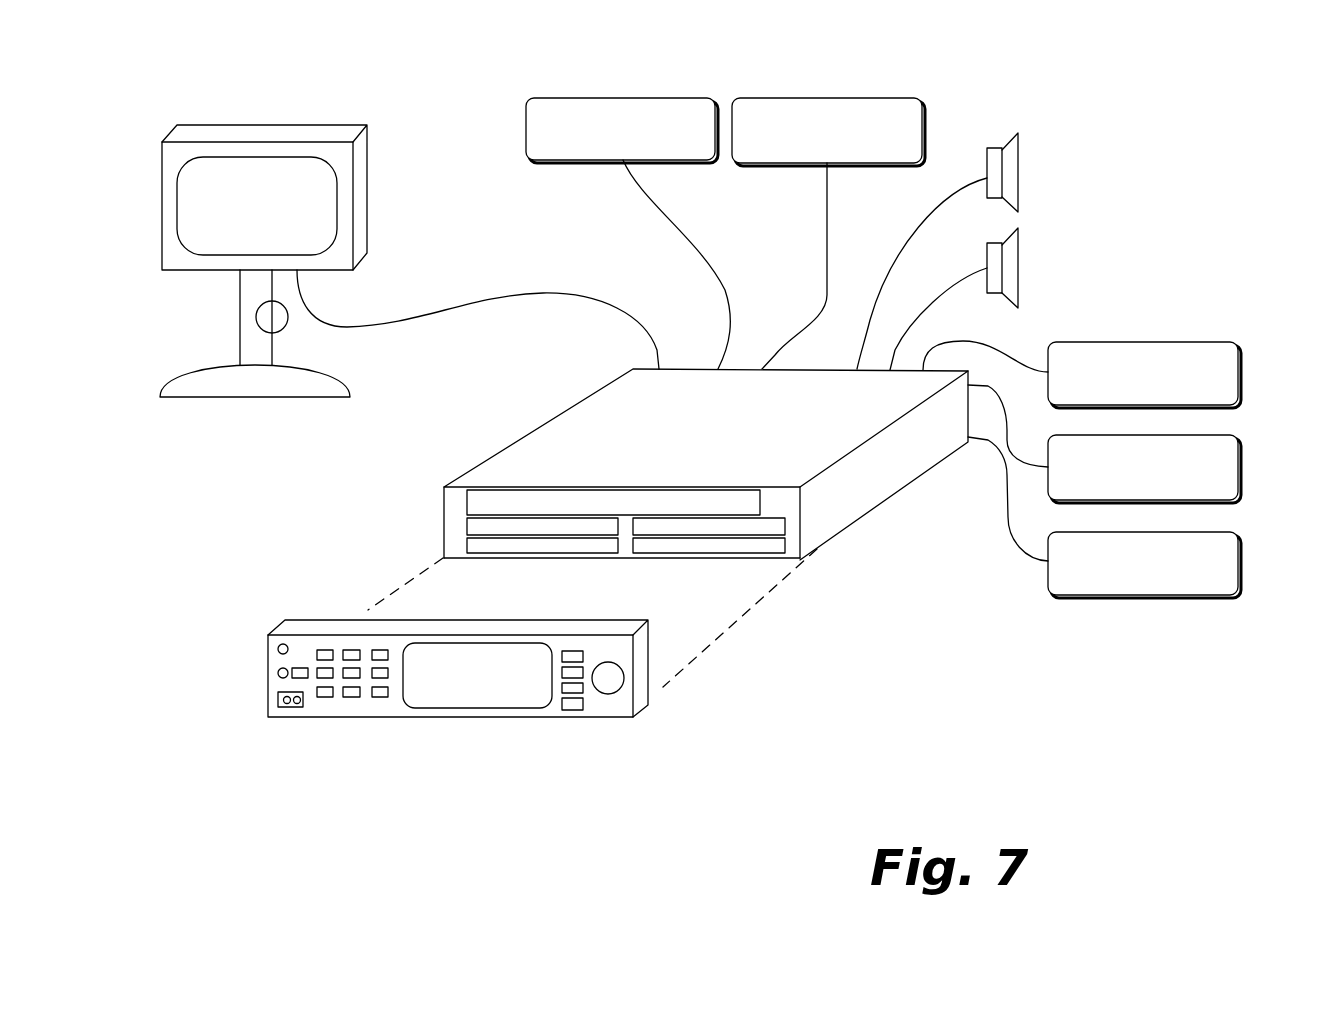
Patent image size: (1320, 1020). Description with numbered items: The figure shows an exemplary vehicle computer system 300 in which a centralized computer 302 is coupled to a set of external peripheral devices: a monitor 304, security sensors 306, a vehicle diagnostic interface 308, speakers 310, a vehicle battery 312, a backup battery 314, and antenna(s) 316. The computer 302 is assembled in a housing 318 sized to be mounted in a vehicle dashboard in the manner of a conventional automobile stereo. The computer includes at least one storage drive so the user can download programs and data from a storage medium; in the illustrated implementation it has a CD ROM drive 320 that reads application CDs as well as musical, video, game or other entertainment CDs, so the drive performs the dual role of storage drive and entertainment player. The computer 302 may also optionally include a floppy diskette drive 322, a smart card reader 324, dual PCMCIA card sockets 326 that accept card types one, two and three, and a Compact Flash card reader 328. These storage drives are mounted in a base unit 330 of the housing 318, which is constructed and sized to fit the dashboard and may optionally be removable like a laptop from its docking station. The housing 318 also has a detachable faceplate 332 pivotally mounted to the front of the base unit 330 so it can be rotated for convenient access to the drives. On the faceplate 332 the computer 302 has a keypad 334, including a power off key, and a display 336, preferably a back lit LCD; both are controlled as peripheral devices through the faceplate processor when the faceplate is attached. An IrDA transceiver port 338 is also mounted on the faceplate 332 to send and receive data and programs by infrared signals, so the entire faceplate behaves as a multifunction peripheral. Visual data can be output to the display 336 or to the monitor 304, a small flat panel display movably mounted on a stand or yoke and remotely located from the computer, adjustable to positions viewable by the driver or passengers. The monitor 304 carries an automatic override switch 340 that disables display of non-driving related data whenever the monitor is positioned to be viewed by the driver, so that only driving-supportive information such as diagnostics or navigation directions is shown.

The vehicle computer system 300 is at (278, 487).
The centralized computer 302 is at (670, 527).
The monitor 304 is at (258, 142).
The security sensors 306 is at (623, 97).
The vehicle diagnostic interface 308 is at (827, 97).
The speakers 310 is at (1018, 183).
The vehicle battery 312 is at (1148, 342).
The backup battery 314 is at (1147, 435).
The antenna(s) 316 is at (1143, 595).
The housing 318 is at (822, 558).
The CD ROM drive 320 is at (572, 502).
The floppy diskette drive 322 is at (507, 525).
The smart card reader 324 is at (728, 527).
The dual PCMCIA card sockets 326 is at (498, 553).
The Compact Flash card reader 328 is at (740, 550).
The base unit 330 is at (888, 482).
The faceplate 332 is at (429, 707).
The keypad 334 is at (352, 698).
The display 336 is at (537, 685).
The IrDA transceiver port 338 is at (292, 712).
The automatic override switch 340 is at (273, 317).